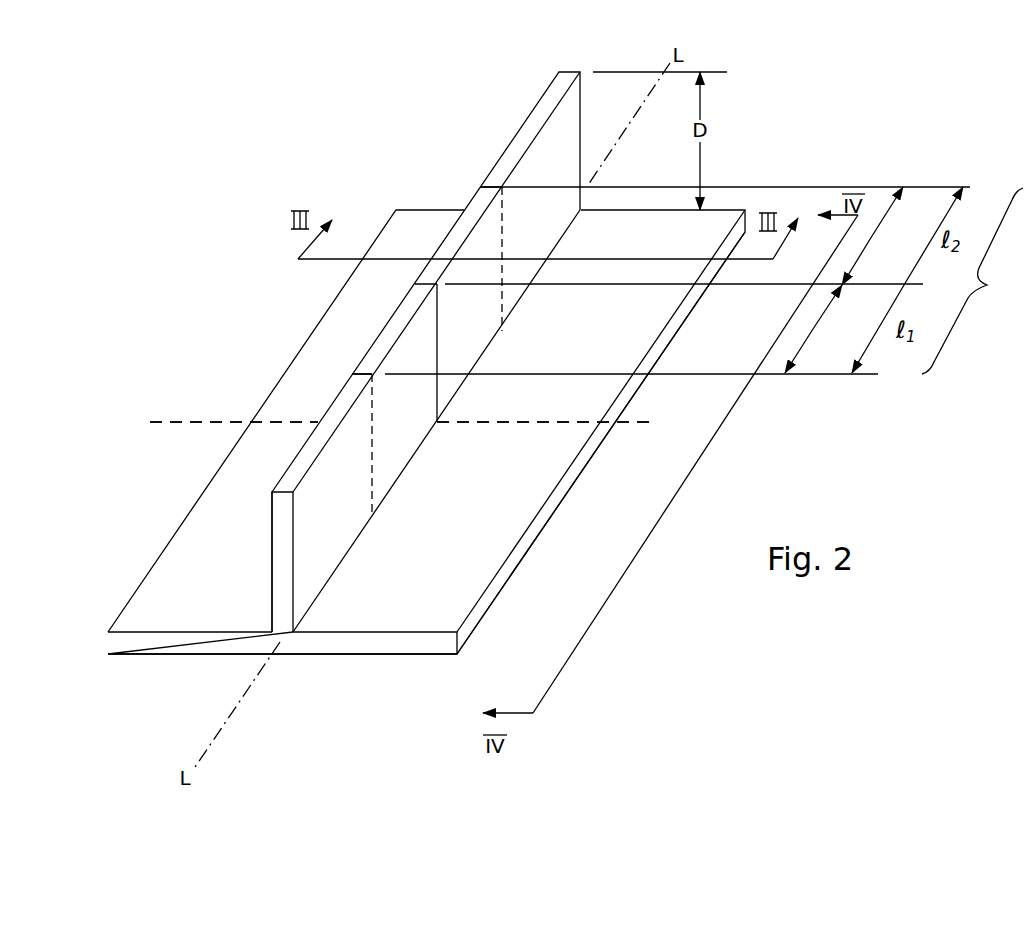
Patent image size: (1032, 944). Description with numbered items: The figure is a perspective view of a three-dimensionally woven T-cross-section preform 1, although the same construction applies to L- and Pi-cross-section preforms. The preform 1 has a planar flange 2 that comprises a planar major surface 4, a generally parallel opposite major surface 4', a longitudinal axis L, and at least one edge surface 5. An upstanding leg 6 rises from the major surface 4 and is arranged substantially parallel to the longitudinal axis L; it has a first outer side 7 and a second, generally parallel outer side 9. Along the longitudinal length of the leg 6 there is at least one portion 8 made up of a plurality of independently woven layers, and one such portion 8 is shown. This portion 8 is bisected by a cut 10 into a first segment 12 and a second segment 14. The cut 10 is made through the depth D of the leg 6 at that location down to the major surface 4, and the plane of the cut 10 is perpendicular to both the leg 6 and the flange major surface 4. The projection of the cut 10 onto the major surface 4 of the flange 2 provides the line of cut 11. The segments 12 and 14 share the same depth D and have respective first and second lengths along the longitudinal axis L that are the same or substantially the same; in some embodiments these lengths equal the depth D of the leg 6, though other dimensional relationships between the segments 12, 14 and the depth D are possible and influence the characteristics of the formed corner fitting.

The 3D woven T-cross-section preform 1 is at (235, 290).
The planar flange 2 is at (145, 577).
The planar major surface 4 is at (399, 514).
The opposite major surface 4' is at (282, 689).
The edge surface 5 is at (145, 648).
The upstanding leg 6 is at (528, 130).
The first outer side 7 is at (270, 585).
The portion 8 is at (937, 280).
The second outer side 9 is at (313, 563).
The cut 10 is at (430, 282).
The line of cut 11 is at (190, 422).
The first segment 12 is at (637, 329).
The second segment 14 is at (725, 236).